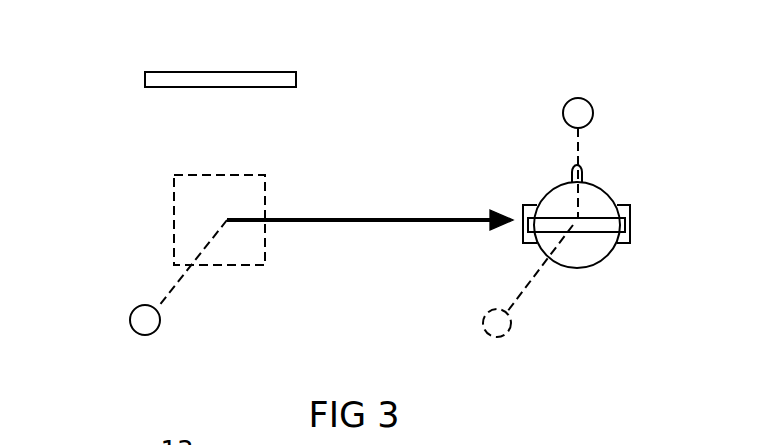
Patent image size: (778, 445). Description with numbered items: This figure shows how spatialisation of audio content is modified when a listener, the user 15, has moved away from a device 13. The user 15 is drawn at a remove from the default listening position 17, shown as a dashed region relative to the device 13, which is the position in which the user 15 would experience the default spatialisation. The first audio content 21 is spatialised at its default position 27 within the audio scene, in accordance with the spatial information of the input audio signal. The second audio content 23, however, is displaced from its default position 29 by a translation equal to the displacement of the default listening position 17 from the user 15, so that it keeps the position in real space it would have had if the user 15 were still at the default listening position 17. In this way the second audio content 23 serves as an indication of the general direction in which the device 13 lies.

The device 13 is at (206, 65).
The user 15 is at (620, 187).
The default listening position 17 is at (165, 208).
The first audio content 21 is at (602, 103).
The second audio content 23 is at (120, 329).
The default position of the first audio content 27 is at (558, 105).
The default position of the second audio content 29 is at (512, 340).